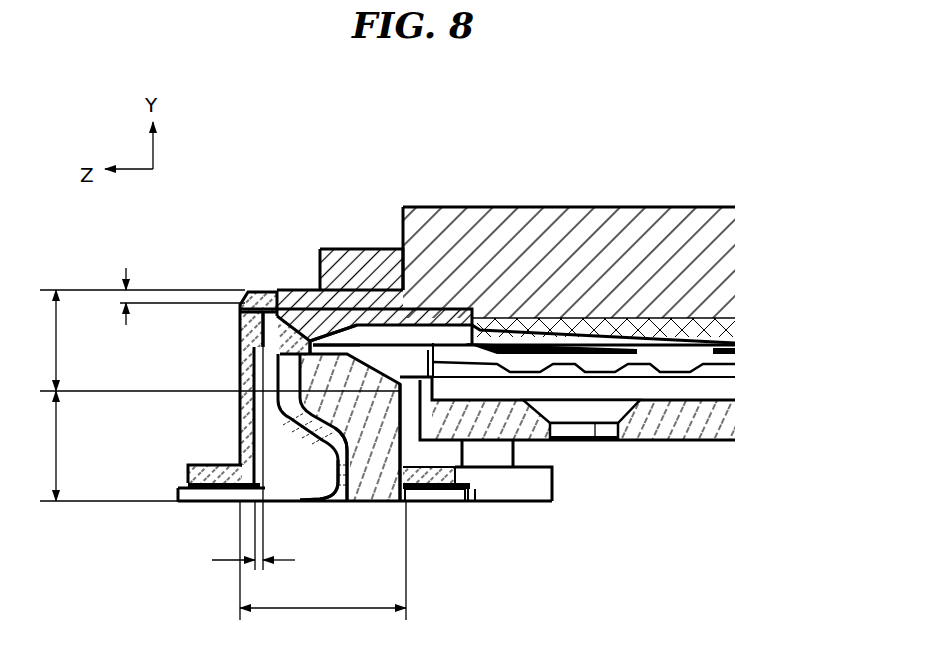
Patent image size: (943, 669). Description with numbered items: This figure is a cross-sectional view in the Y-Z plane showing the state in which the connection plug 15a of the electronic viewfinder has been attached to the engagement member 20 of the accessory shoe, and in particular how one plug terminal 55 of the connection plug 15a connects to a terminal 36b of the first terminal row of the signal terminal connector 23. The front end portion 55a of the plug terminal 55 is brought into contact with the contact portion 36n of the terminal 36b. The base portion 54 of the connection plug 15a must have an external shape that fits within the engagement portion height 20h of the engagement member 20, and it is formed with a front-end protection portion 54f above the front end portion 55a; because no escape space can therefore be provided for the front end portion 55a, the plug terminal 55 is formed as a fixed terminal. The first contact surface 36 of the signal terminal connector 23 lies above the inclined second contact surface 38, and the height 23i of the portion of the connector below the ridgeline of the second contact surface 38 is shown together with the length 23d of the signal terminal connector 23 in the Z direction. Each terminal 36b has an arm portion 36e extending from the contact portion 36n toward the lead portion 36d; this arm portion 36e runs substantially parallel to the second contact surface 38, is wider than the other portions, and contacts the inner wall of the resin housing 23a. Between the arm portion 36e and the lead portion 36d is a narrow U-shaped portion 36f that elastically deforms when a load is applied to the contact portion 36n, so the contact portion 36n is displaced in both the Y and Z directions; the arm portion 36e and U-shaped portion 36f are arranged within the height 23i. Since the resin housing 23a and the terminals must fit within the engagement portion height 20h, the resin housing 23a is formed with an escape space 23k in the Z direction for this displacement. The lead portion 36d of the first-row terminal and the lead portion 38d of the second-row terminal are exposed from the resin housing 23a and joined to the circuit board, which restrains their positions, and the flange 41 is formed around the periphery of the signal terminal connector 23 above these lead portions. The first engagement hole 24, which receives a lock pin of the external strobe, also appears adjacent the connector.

The connection plug 15a is at (668, 203).
The engagement member 20 is at (380, 262).
The engagement portion height 20h is at (32, 340).
The signal terminal connector 23 is at (240, 288).
The resin housing 23a is at (380, 503).
The length of the signal terminal connector 23d is at (323, 624).
The height 23i is at (33, 446).
The escape space 23k is at (253, 576).
The first engagement hole 24 is at (598, 416).
The first contact surface 36 is at (270, 302).
The terminal 36b is at (268, 335).
The lead portion 36d is at (207, 503).
The arm portion 36e is at (288, 446).
The U-shaped portion 36f is at (330, 503).
The contact portion 36n is at (303, 343).
The second contact surface 38 is at (395, 392).
The lead portion 38d is at (443, 503).
The flange 41 is at (527, 503).
The base portion 54 is at (588, 252).
The front-end protection portion 54f is at (101, 296).
The plug terminal 55 is at (458, 322).
The front end portion 55a is at (328, 335).